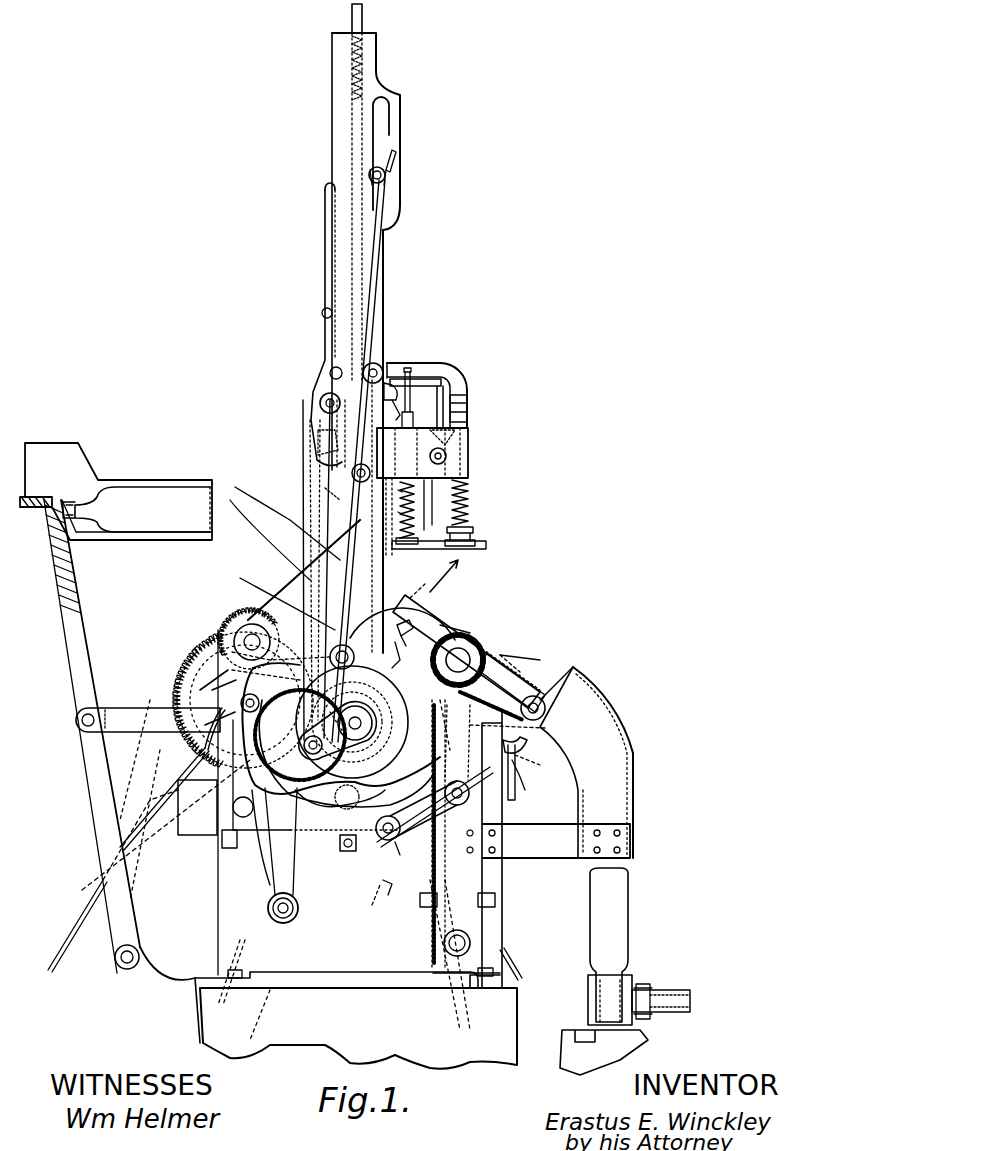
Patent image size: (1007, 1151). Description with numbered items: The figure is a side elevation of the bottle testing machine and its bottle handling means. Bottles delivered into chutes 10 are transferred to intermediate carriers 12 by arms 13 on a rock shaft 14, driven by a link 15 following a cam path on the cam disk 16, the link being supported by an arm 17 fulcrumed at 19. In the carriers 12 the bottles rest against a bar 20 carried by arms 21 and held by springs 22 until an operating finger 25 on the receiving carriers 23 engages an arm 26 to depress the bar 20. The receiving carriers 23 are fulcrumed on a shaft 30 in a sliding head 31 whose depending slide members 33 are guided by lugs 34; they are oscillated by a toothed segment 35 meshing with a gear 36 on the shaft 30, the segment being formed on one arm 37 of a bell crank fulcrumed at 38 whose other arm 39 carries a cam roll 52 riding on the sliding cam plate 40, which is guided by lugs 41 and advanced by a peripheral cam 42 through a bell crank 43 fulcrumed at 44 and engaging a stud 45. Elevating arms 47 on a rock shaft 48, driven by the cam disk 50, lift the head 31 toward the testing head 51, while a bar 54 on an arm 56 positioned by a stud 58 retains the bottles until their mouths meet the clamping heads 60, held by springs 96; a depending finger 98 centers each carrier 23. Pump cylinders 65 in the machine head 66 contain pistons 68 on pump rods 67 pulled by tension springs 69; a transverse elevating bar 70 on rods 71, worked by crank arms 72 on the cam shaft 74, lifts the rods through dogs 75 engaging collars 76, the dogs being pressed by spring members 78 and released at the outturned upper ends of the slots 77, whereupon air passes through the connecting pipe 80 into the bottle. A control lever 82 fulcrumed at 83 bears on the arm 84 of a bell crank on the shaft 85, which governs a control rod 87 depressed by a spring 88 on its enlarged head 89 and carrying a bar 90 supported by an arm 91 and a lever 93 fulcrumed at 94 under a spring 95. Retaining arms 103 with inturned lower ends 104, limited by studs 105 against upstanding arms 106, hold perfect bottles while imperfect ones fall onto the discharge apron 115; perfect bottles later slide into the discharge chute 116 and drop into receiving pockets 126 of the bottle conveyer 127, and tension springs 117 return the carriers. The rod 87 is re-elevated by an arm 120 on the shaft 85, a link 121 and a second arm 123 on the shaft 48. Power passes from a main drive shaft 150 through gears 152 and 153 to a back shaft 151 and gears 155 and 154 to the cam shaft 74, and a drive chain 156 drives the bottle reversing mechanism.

The chutes 10 is at (60, 442).
The intermediate carriers 12 is at (215, 492).
The arms 13 is at (76, 624).
The rock shaft 14 is at (142, 950).
The link 15 is at (122, 712).
The cam disk 16 is at (333, 826).
The arm 17 is at (298, 905).
The fulcrum 19 is at (297, 918).
The bar 20 is at (385, 640).
The arms 21 is at (325, 492).
The springs 22 is at (380, 590).
The receiving carriers 23 is at (500, 662).
The operating finger 25 is at (410, 615).
The arm 26 is at (434, 579).
The shaft 30 is at (460, 655).
The sliding head 31 is at (500, 823).
The slide members 33 is at (440, 900).
The lugs 34 is at (497, 902).
The toothed segment 35 is at (535, 690).
The gear 36 is at (468, 648).
The arm 37 is at (516, 773).
The fulcrum 38 is at (470, 793).
The arm 39 is at (428, 790).
The sliding cam plate 40 is at (348, 853).
The lugs 41 is at (212, 780).
The peripheral cam 42 is at (453, 622).
The bell crank 43 is at (200, 748).
The fulcrum 44 is at (240, 702).
The stud 45 is at (262, 870).
The elevating arms 47 is at (250, 636).
The rock shaft 48 is at (226, 620).
The cam disk 50 is at (340, 808).
The testing head 51 is at (470, 426).
The cam roll 52 is at (395, 842).
The bar 54 is at (546, 707).
The arm 56 is at (520, 660).
The stud 58 is at (510, 650).
The clamping heads 60 is at (477, 536).
The pump cylinders 65 is at (383, 265).
The head 66 is at (380, 78).
The pump rod 67 is at (365, 18).
The piston 68 is at (380, 345).
The tension spring 69 is at (345, 90).
The elevating bar 70 is at (388, 176).
The elevating rods 71 is at (322, 441).
The crank arms 72 is at (372, 905).
The cam shaft 74 is at (442, 645).
The dog 75 is at (330, 176).
The collar 76 is at (393, 158).
The slots 77 is at (383, 142).
The spring member 78 is at (400, 168).
The connecting pipe 80 is at (446, 364).
The control lever 82 is at (322, 262).
The fulcrum 83 is at (322, 315).
The arm 84 is at (325, 420).
The fulcrum shaft 85 is at (320, 403).
The control rod 87 is at (410, 378).
The spring 88 is at (405, 498).
The enlarged head 89 is at (403, 512).
The bar 90 is at (432, 380).
The arm 91 is at (386, 385).
The lever 93 is at (468, 403).
The fulcrum 94 is at (446, 457).
The spring 95 is at (470, 440).
The spring 96 is at (469, 495).
The depending finger 98 is at (413, 520).
The retaining arms 103 is at (545, 731).
The inturned lower ends 104 is at (540, 748).
The stud 105 is at (546, 765).
The upstanding arm 106 is at (550, 785).
The discharge apron 115 is at (172, 843).
The discharge chute 116 is at (633, 746).
The tension springs 117 is at (432, 868).
The arm 120 is at (400, 400).
The link 121 is at (470, 548).
The arm 123 is at (300, 606).
The receiving pockets 126 is at (588, 1000).
The bottle conveyer 127 is at (655, 1002).
The main drive shaft 150 is at (330, 832).
The back shaft 151 is at (232, 652).
The gear 152 is at (166, 825).
The gear 153 is at (212, 630).
The gear 154 is at (416, 812).
The gear 155 is at (232, 670).
The drive chain 156 is at (520, 965).